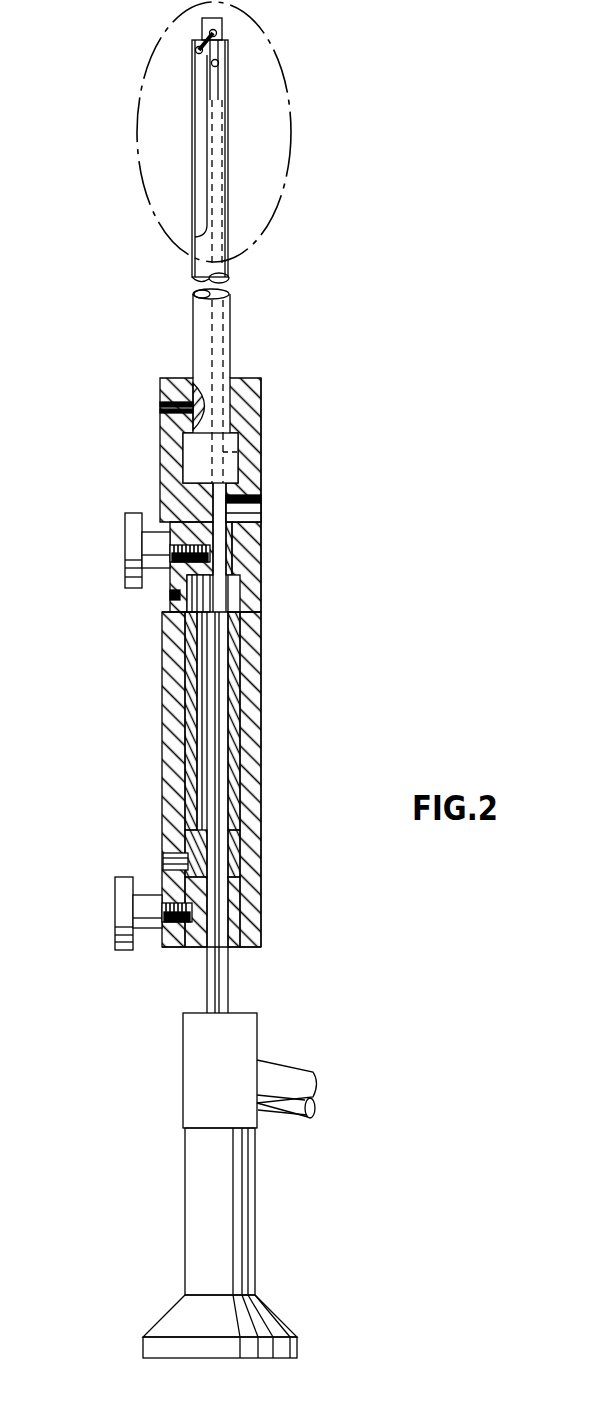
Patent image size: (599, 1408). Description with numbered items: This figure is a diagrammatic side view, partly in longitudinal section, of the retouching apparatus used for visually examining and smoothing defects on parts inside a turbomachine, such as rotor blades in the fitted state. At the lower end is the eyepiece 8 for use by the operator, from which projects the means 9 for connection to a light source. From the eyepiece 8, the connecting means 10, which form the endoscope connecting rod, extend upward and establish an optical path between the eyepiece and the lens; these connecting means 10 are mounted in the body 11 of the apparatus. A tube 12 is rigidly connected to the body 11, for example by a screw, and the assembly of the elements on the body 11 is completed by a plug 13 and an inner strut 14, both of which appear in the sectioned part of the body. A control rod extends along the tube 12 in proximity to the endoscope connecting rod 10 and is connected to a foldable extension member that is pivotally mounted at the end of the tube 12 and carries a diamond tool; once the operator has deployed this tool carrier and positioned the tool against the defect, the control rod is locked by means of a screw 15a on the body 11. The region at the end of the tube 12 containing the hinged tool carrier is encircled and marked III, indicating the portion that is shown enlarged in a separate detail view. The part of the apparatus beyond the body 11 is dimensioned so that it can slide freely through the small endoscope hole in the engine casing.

The detail view of gas measuring tube tip III is at (137, 110).
The tube 12 is at (195, 323).
The body 11 is at (165, 447).
The screw 15a is at (128, 563).
The inner strut 14 is at (185, 707).
The plug 13 is at (163, 878).
The connecting means 10 is at (220, 982).
The means for connection to a light source 9 is at (288, 1116).
The eyepiece 8 is at (172, 1318).